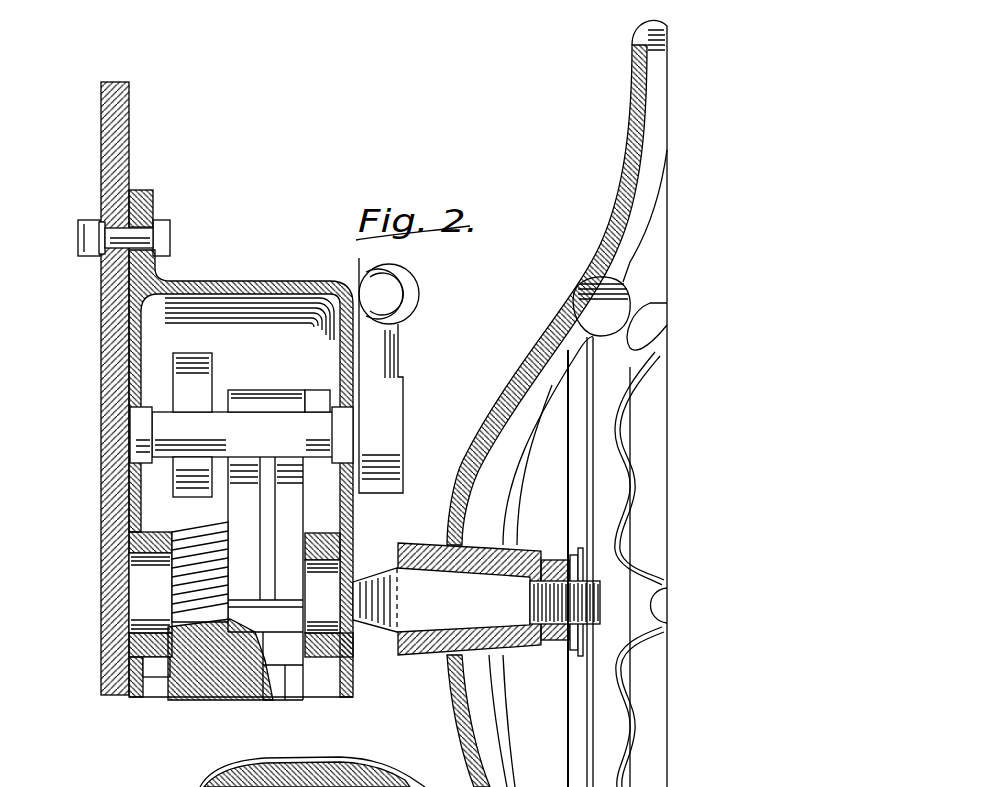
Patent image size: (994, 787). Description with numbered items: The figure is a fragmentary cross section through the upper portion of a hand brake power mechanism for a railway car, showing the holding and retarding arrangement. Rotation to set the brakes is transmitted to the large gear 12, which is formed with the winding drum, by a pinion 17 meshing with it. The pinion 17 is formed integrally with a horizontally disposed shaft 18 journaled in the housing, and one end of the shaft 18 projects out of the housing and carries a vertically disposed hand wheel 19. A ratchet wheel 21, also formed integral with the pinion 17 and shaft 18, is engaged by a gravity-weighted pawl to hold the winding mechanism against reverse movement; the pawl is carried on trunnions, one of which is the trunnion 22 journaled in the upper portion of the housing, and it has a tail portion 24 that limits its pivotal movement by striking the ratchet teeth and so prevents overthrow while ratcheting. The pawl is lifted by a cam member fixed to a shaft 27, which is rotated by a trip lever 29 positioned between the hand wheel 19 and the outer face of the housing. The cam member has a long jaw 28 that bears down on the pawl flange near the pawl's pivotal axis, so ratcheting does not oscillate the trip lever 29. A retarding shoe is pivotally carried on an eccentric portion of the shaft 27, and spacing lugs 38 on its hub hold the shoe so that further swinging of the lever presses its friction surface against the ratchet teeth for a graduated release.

The gear 12 is at (187, 693).
The pinion 17 is at (203, 553).
The shaft 18 is at (390, 622).
The hand wheel 19 is at (610, 218).
The ratchet wheel 21 is at (288, 693).
The trunnion 22 is at (347, 442).
The tail portion 24 is at (288, 563).
The shaft 27 is at (153, 437).
The long jaw 28 is at (183, 397).
The trip lever 29 is at (398, 355).
The spacing lugs 38 is at (220, 394).